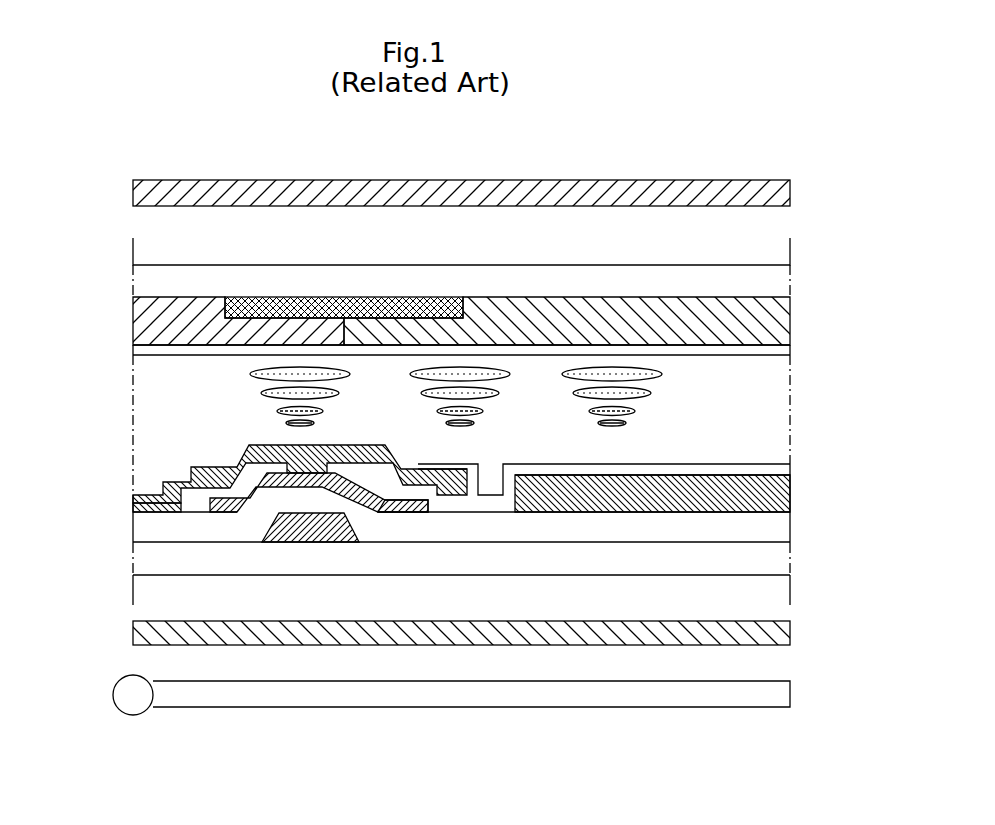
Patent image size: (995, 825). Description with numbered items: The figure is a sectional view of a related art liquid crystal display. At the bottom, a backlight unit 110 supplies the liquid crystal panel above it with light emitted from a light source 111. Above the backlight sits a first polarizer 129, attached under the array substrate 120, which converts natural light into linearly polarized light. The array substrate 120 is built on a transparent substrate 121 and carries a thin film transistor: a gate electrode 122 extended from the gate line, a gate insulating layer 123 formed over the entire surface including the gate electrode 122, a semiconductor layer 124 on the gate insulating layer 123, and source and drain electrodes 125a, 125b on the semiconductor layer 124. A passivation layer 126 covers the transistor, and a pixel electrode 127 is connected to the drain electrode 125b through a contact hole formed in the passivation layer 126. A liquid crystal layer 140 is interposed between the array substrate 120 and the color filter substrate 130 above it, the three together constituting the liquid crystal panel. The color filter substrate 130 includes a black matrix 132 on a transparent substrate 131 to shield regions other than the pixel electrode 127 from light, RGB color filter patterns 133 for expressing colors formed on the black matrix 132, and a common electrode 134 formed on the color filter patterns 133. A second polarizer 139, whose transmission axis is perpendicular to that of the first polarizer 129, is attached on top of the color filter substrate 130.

The backlight unit 110 is at (792, 693).
The light source 111 is at (120, 689).
The array substrate 120 is at (472, 587).
The transparent substrate 121 is at (160, 575).
The gate electrode 122 is at (267, 532).
The gate insulating layer 123 is at (145, 528).
The semiconductor layer 124 is at (191, 472).
The source electrode 125a is at (133, 503).
The drain electrode 125b is at (403, 494).
The passivation layer 126 is at (213, 467).
The pixel electrode 127 is at (782, 467).
The first polarizer 129 is at (792, 634).
The color filter substrate 130 is at (435, 298).
The transparent substrate 131 is at (145, 280).
The black matrix 132 is at (225, 313).
The color filter patterns 133 is at (140, 332).
The common electrode 134 is at (140, 350).
The second polarizer 139 is at (792, 196).
The liquid crystal layer 140 is at (799, 362).